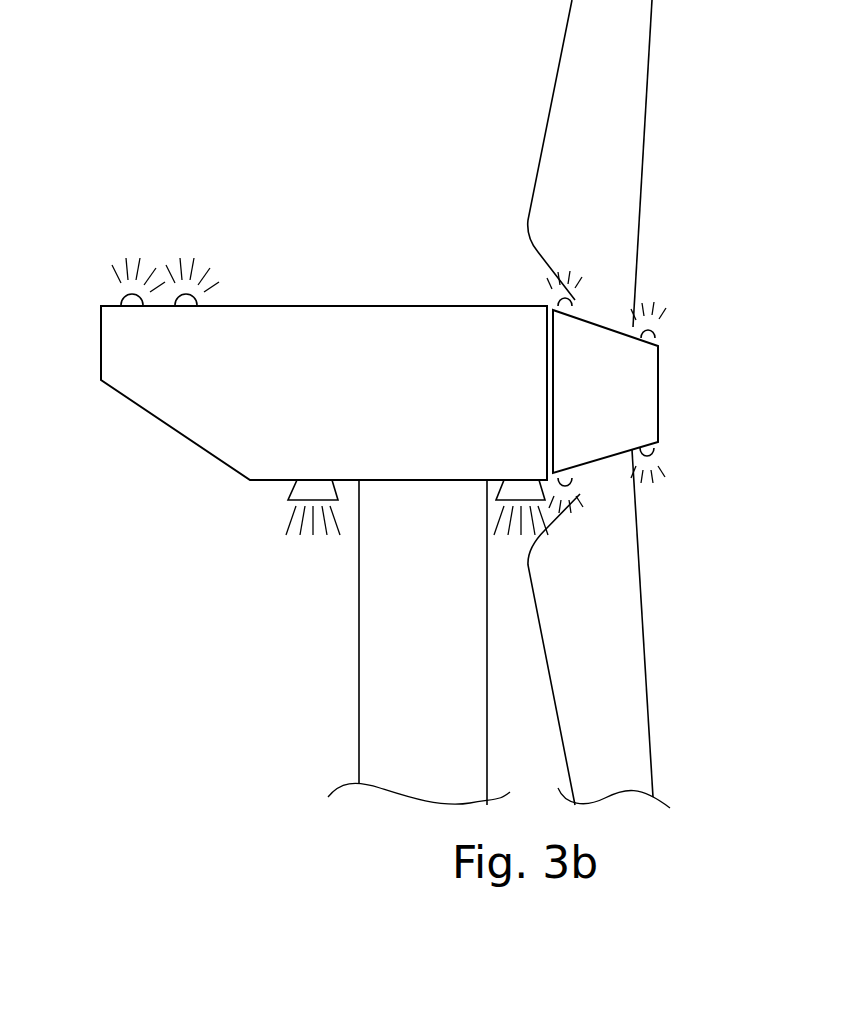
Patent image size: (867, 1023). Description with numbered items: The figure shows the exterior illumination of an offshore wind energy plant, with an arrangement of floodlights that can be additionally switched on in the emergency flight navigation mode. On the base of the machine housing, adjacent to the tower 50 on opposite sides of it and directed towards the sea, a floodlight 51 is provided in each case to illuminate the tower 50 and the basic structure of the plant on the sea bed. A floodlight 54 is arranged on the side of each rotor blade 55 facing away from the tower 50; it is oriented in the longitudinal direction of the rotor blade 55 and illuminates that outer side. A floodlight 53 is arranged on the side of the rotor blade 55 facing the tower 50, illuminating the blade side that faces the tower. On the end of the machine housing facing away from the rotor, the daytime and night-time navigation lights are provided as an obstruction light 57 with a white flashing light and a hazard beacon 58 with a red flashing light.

The tower 50 is at (373, 740).
The floodlight 51 is at (302, 487).
The floodlight 53 is at (555, 300).
The floodlight 54 is at (657, 337).
The rotor blade 55 is at (625, 110).
The obstruction light 57 is at (120, 302).
The hazard beacon 58 is at (196, 298).